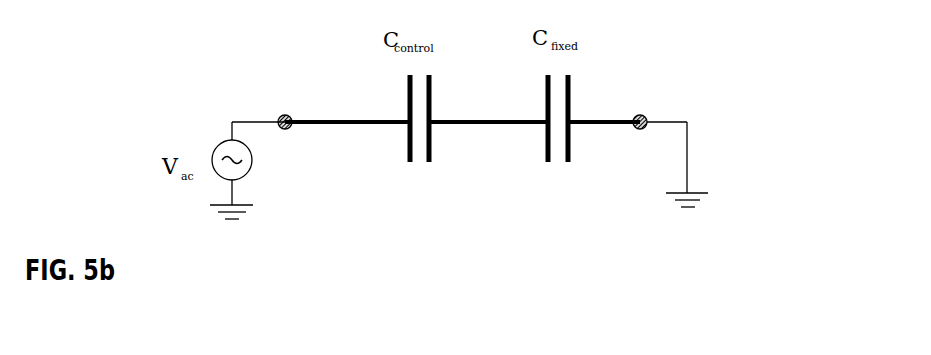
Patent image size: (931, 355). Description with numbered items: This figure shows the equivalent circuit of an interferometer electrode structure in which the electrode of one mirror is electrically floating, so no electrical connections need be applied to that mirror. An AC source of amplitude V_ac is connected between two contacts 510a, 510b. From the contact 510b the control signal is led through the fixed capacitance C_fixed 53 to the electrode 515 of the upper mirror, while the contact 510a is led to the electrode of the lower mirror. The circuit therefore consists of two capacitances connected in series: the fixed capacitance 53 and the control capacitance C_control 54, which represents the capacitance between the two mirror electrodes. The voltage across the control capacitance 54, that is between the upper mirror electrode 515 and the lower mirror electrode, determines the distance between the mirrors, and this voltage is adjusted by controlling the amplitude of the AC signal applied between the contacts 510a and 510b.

The contact 510a is at (278, 113).
The contact 510b is at (650, 113).
The control capacitance 54 is at (393, 152).
The electrode of the upper mirror 515 is at (472, 120).
The fixed capacitance 53 is at (577, 103).